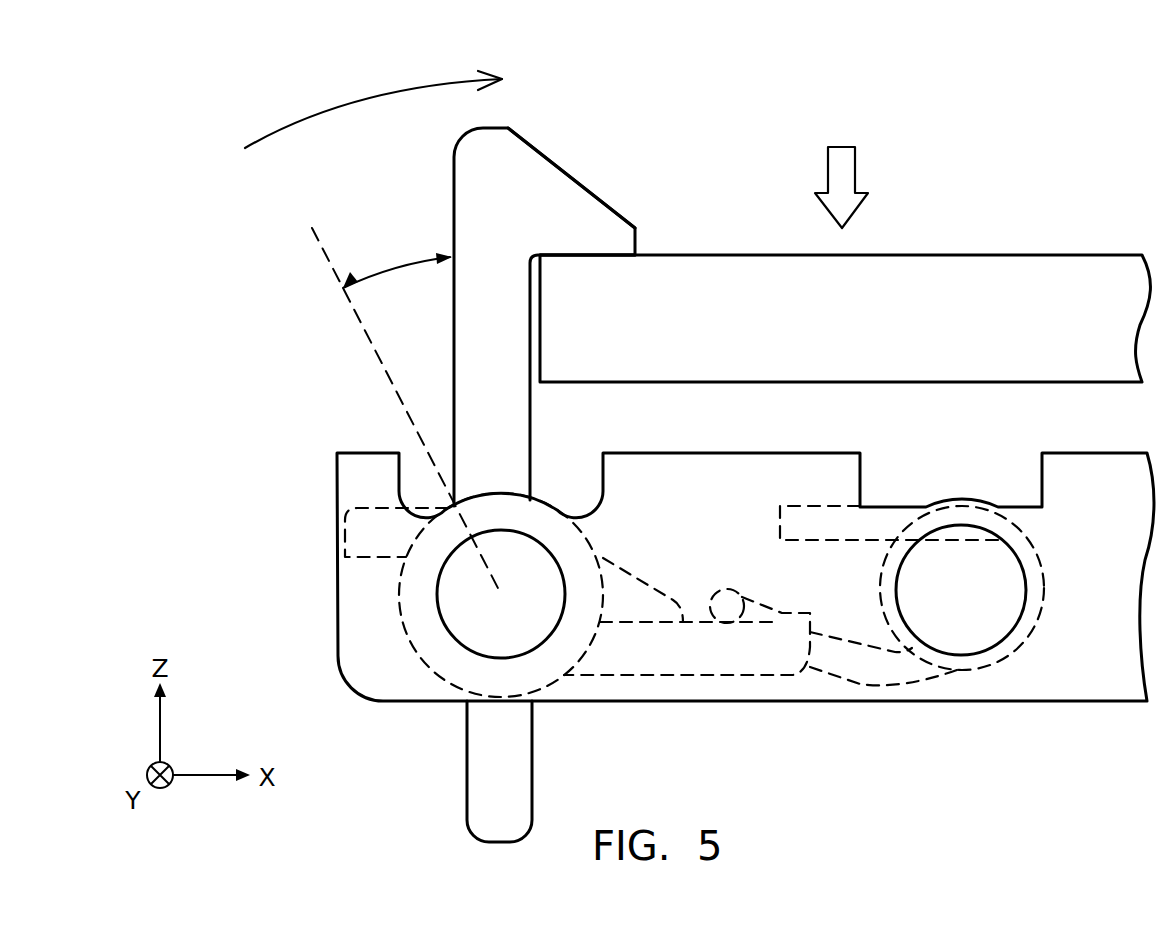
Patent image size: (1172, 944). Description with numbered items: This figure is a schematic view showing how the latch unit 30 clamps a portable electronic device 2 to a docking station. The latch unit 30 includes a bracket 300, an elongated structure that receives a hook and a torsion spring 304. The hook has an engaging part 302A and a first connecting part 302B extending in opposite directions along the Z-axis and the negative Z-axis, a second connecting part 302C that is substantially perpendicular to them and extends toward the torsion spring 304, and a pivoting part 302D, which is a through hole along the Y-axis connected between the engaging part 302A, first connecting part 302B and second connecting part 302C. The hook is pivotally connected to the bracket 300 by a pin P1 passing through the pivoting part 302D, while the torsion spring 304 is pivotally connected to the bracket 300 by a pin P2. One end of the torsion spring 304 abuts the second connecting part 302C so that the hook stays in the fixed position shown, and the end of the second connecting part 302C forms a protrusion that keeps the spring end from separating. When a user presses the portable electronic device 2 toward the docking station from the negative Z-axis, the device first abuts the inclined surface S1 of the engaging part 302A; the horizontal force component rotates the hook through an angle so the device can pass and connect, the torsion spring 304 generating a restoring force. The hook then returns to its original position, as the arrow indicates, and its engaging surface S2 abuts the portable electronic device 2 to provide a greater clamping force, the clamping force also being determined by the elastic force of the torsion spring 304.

The portable electronic device 2 is at (992, 293).
The latch unit 30 is at (293, 474).
The bracket 300 is at (375, 667).
The engaging part 302A is at (473, 171).
The first connecting part 302B is at (487, 776).
The second connecting part 302C is at (703, 660).
The pivoting part 302D is at (443, 632).
The torsion spring 304 is at (856, 670).
The pin P1 is at (470, 606).
The pin P2 is at (962, 623).
The inclined surface S1 is at (572, 178).
The engaging surface S2 is at (588, 255).